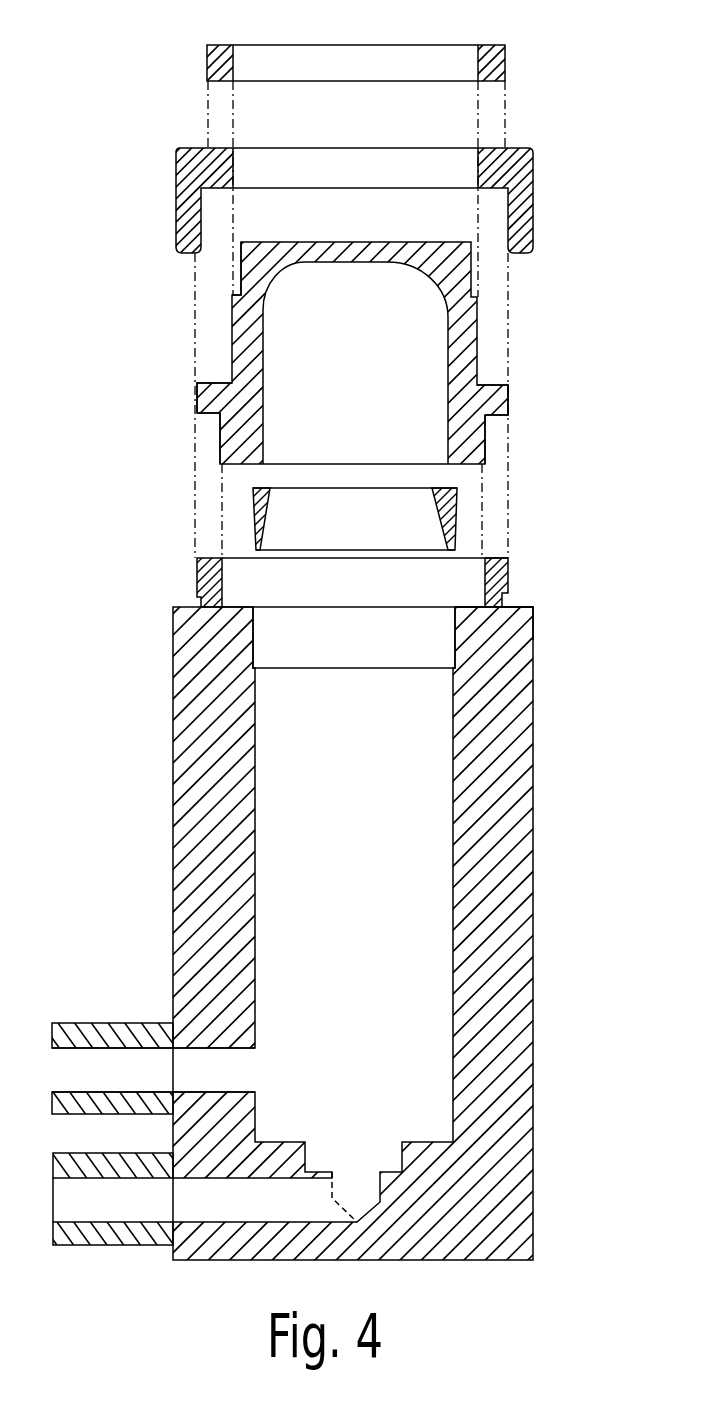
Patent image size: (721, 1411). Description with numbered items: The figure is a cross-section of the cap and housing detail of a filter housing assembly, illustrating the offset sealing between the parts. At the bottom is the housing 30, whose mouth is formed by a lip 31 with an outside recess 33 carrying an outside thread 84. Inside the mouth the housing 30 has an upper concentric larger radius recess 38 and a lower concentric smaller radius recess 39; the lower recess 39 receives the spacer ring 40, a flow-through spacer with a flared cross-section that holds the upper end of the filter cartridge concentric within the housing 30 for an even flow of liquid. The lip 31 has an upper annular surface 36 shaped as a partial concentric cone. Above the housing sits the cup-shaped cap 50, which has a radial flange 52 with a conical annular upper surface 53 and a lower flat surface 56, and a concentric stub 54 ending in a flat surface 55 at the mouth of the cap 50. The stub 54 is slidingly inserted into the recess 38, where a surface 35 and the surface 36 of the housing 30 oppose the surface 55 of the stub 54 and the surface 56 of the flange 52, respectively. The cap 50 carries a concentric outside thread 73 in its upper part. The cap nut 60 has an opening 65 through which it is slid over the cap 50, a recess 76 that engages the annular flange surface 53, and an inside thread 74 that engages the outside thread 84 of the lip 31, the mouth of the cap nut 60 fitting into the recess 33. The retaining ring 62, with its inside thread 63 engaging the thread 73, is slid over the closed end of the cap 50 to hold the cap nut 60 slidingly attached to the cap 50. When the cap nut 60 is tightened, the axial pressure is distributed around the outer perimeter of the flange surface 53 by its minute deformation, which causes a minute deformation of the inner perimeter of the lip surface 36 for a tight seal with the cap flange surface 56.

The housing 30 is at (360, 915).
The lip 31 is at (494, 558).
The outside recess 33 is at (513, 610).
The surface 35 is at (470, 606).
The upper annular surface 36 is at (337, 547).
The upper concentric larger radius recess 38 is at (196, 562).
The lower concentric smaller radius recess 39 is at (255, 633).
The spacer ring 40 is at (262, 497).
The cap 50 is at (360, 355).
The radial flange 52 is at (198, 402).
The annular upper surface 53 is at (490, 385).
The concentric stub 54 is at (223, 449).
The flat surface 55 is at (455, 465).
The lower flat surface 56 is at (211, 417).
The cap nut 60 is at (338, 178).
The retaining ring 62 is at (303, 42).
The inside thread 63 is at (238, 63).
The opening 65 is at (378, 167).
The outside thread 73 is at (233, 300).
The inside thread 74 is at (506, 236).
The recess 76 is at (213, 190).
The outside thread 84 is at (495, 574).